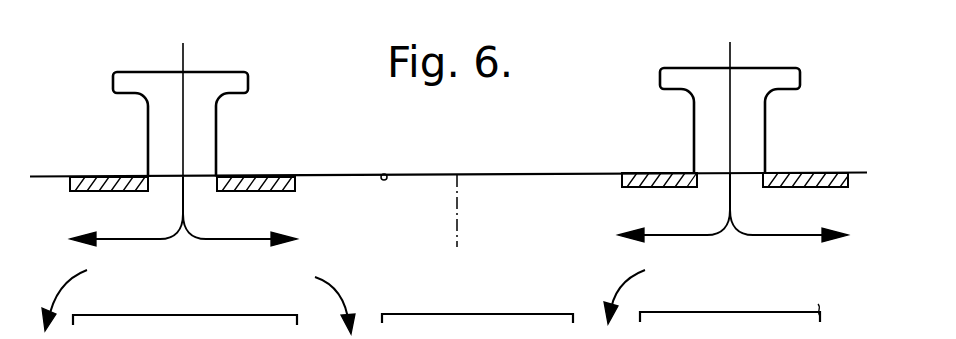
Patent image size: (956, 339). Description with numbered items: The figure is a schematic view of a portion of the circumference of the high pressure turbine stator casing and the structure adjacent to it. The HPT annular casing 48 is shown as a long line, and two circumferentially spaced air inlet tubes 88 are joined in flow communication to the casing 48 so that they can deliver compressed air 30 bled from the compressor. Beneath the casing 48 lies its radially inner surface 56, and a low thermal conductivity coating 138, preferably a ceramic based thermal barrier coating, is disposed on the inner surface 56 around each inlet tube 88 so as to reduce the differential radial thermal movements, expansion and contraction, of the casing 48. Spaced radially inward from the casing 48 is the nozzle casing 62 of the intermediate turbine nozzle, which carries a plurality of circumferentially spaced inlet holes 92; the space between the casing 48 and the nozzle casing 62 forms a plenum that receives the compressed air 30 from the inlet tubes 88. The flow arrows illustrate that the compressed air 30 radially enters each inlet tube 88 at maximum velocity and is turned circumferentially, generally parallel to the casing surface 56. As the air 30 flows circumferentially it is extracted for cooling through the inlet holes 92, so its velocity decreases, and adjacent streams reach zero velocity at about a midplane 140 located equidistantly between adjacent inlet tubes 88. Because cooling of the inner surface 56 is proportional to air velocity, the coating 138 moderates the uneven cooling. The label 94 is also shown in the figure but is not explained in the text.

The compressed air 30 is at (178, 57).
The air inlet tube 88 is at (248, 72).
The low thermal conductivity coating 138 is at (240, 192).
The radially inner surface 56 is at (384, 174).
The midplane 140 is at (455, 175).
The HPT annular casing 48 is at (542, 175).
The plate section 94 is at (583, 208).
The inlet hole 92 is at (382, 312).
The nozzle casing 62 is at (485, 312).